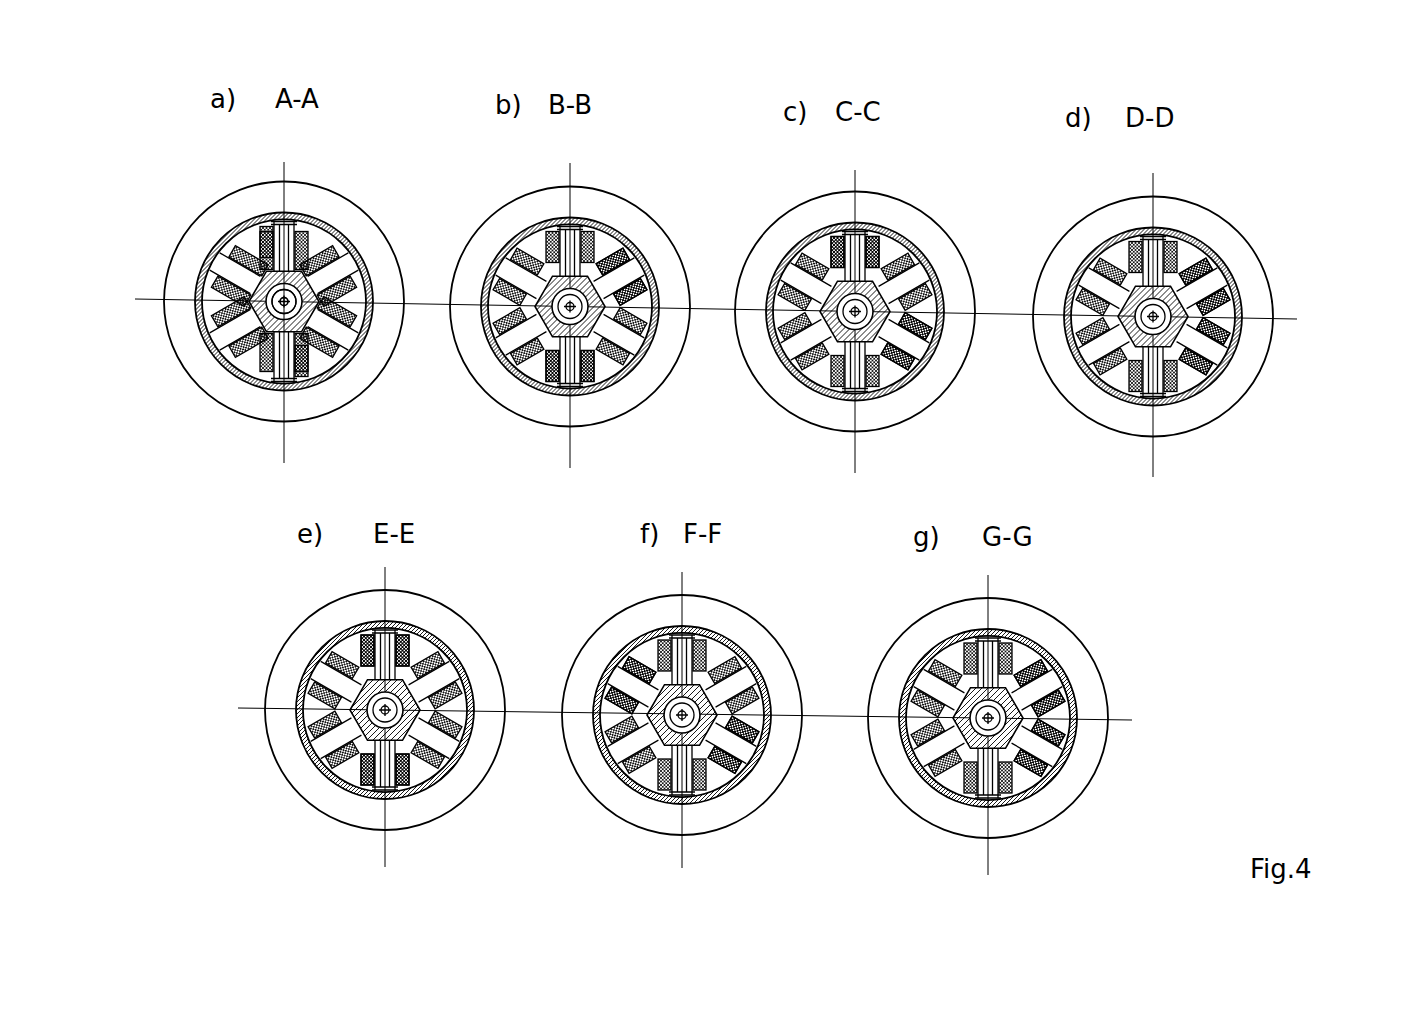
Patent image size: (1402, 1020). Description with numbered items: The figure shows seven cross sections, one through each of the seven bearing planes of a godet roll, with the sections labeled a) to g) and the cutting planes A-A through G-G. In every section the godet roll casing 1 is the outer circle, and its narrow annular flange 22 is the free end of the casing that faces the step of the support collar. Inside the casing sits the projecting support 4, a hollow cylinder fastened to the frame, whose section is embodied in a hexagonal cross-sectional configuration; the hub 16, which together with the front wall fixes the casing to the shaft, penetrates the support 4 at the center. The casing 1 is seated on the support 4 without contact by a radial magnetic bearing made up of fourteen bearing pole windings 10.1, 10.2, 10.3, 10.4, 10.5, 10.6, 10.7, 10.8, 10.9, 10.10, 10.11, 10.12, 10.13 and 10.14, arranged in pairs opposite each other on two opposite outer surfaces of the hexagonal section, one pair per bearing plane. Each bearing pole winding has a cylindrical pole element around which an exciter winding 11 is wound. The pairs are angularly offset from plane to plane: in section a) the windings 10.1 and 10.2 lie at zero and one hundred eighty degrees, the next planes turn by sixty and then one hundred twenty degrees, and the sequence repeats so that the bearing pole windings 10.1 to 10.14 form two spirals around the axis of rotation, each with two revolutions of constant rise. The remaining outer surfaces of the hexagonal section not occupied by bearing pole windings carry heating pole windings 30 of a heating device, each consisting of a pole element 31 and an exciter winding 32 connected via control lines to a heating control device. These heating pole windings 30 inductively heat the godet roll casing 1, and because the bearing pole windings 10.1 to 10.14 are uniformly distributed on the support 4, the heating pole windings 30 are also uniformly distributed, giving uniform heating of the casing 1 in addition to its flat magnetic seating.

The godet roll casing 1 is at (332, 238).
The support 4 is at (300, 235).
The exciter winding 11 is at (297, 378).
The hub 16 is at (313, 283).
The annular flange 22 is at (180, 255).
The heating pole windings 30 is at (195, 320).
The pole element 31 is at (213, 347).
The exciter winding 32 is at (237, 357).
The bearing pole winding 10.1 is at (253, 243).
The bearing pole winding 10.2 is at (313, 360).
The bearing pole winding 10.3 is at (612, 242).
The bearing pole winding 10.4 is at (537, 373).
The bearing pole winding 10.5 is at (820, 245).
The bearing pole winding 10.6 is at (893, 370).
The bearing pole winding 10.7 is at (1190, 253).
The bearing pole winding 10.8 is at (1193, 383).
The bearing pole winding 10.9 is at (420, 643).
The bearing pole winding 10.10 is at (348, 770).
The bearing pole winding 10.11 is at (612, 718).
The bearing pole winding 10.12 is at (717, 773).
The bearing pole winding 10.13 is at (1027, 650).
The bearing pole winding 10.14 is at (1028, 783).